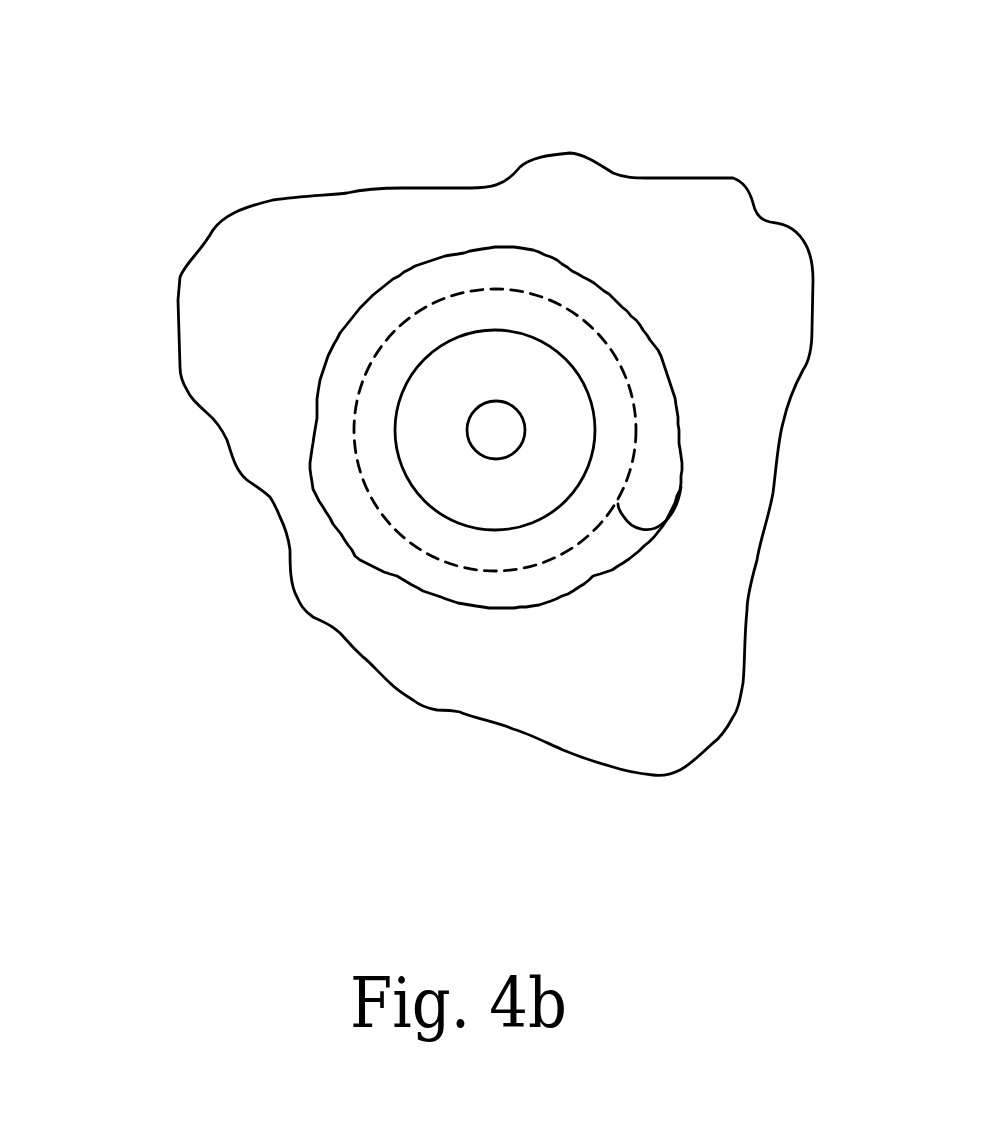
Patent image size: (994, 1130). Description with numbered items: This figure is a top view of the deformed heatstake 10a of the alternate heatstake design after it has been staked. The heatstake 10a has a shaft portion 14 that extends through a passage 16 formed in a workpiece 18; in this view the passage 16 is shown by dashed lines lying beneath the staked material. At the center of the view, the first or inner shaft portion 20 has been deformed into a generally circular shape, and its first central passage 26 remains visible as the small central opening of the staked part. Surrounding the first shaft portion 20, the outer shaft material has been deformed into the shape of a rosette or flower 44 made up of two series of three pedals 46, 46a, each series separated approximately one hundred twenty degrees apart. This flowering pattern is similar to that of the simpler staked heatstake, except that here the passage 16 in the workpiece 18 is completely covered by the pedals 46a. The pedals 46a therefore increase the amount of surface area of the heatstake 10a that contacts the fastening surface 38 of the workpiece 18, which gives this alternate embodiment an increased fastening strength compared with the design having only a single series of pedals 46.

The deformed heatstake 10a is at (325, 137).
The shaft portion 14 is at (347, 283).
The passage 16 is at (681, 487).
The workpiece 18 is at (210, 460).
The first shaft portion 20 is at (607, 400).
The first central passage 26 is at (492, 430).
The fastening surface 38 is at (240, 388).
The rosette or flower 44 is at (588, 246).
The pedals 46 is at (603, 297).
The pedals 46a is at (463, 260).